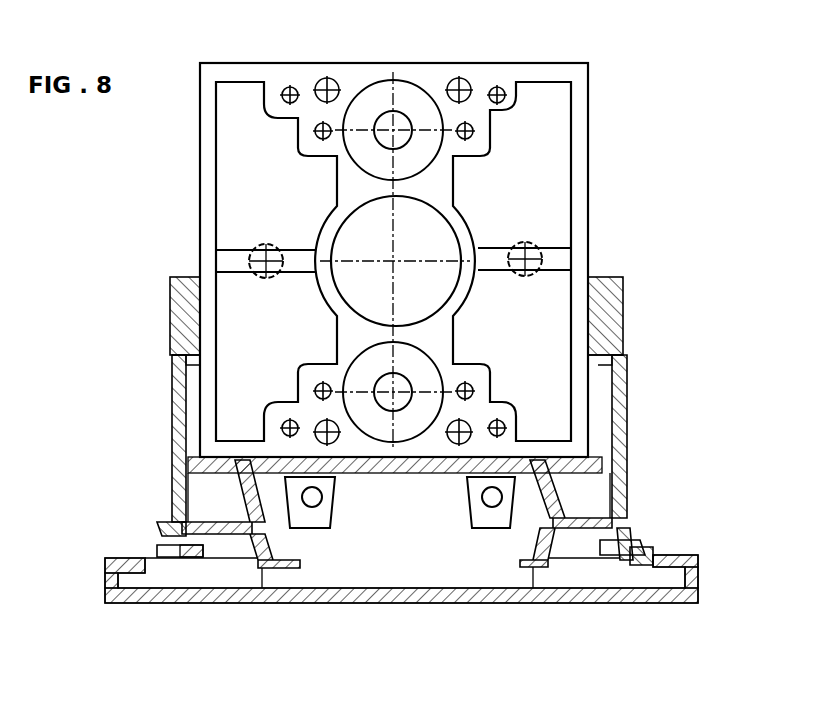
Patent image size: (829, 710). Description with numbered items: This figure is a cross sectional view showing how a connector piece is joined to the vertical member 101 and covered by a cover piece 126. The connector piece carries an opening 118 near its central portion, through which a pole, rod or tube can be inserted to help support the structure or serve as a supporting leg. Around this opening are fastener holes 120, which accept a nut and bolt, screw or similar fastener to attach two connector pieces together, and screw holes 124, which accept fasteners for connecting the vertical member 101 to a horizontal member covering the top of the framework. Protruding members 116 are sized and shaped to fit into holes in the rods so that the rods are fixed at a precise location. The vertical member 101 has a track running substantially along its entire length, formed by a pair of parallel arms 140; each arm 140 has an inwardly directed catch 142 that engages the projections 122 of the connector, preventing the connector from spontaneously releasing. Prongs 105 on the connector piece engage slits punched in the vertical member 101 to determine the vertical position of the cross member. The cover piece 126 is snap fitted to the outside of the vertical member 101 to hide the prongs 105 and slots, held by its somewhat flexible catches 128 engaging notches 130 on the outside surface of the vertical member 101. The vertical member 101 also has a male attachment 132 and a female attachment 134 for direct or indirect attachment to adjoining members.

The vertical member 101 is at (176, 465).
The prongs 105 is at (328, 508).
The protruding members 116 is at (266, 248).
The opening 118 is at (432, 232).
The fastener holes 120 is at (393, 95).
The projections 122 is at (182, 358).
The screw holes 124 is at (295, 88).
The cover piece 126 is at (392, 603).
The flexible catches 128 is at (293, 590).
The notches 130 is at (260, 507).
The male attachment 132 is at (160, 557).
The female attachment 134 is at (645, 540).
The arms 140 is at (185, 410).
The inwardly directed catch 142 is at (175, 290).